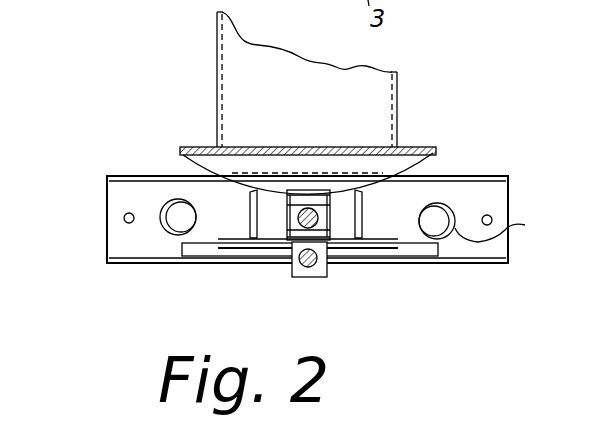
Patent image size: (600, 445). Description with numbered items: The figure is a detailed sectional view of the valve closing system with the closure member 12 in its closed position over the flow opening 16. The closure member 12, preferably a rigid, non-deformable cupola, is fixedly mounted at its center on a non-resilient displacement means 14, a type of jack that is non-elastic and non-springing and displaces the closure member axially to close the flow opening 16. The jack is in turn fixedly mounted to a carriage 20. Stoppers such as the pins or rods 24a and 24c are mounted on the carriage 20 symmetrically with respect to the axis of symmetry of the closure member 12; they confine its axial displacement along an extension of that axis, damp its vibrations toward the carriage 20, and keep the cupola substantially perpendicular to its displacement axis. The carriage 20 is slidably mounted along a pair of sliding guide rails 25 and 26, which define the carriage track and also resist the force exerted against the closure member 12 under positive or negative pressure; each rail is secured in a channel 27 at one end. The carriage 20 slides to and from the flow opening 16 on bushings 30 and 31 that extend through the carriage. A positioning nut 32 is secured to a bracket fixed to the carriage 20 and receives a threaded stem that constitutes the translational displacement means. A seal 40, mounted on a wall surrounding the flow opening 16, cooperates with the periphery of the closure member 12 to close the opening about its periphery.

The closure member 12 is at (238, 160).
The non-resilient displacement means 14 is at (292, 219).
The flow opening 16 is at (375, 92).
The carriage 20 is at (213, 248).
The stopper 24a is at (362, 212).
The stopper 24c is at (252, 217).
The sliding guide rail 25 is at (175, 230).
The sliding guide rail 26 is at (453, 212).
The channel 27 is at (117, 207).
The bushing 30 is at (506, 223).
The bushing 31 is at (167, 230).
The positioning nut 32 is at (320, 268).
The seal 40 is at (408, 147).